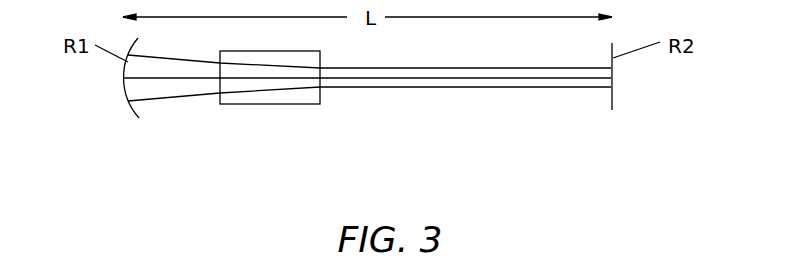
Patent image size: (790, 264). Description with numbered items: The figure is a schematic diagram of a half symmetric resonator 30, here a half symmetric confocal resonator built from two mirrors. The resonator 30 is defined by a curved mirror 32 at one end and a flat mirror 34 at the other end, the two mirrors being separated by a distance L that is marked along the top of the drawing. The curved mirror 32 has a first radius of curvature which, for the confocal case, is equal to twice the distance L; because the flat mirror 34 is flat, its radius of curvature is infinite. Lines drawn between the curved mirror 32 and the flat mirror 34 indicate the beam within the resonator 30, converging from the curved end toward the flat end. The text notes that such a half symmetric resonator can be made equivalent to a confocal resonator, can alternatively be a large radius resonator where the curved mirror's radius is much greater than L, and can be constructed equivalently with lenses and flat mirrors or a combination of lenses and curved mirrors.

The half symmetric resonator 30 is at (367, 105).
The curved mirror 32 is at (123, 103).
The flat mirror 34 is at (622, 97).